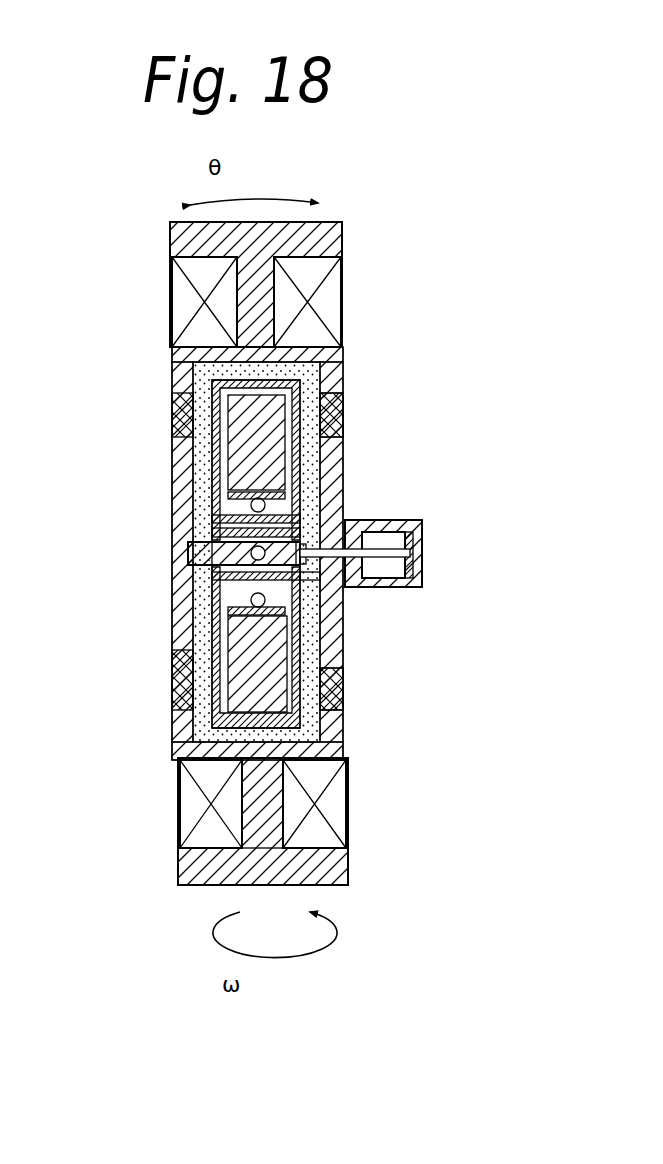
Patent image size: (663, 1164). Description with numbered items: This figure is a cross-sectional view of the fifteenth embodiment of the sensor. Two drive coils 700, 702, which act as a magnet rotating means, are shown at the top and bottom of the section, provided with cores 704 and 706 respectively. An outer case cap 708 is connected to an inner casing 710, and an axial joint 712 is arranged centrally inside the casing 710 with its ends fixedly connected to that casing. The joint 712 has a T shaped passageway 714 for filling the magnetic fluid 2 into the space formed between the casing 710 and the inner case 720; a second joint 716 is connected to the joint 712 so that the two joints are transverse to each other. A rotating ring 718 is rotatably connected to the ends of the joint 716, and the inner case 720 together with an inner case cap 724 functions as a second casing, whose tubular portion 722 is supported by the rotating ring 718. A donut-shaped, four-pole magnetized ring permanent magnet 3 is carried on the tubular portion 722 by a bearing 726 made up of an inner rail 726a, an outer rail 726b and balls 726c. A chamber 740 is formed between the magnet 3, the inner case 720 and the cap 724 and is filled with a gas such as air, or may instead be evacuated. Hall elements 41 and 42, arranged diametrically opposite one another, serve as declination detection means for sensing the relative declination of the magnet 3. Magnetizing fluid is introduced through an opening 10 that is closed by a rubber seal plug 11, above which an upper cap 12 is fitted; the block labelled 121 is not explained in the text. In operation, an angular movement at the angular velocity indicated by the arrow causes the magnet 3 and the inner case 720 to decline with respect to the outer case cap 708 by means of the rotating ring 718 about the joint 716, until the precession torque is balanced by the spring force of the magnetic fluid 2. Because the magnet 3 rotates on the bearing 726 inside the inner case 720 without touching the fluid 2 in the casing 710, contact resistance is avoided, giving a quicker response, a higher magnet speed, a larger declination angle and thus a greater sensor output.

The drive coil 700 is at (343, 298).
The core 704 is at (180, 228).
The drive coil 702 is at (190, 805).
The core 706 is at (185, 868).
The outer case cap 708 is at (343, 358).
The inner case 720 is at (343, 748).
The chamber 740 is at (185, 352).
The inner casing 710 is at (200, 375).
The inner case cap 724 is at (213, 402).
The magnetic fluid 2 is at (205, 734).
The magnet block 121 is at (183, 422).
The Hall element 41 is at (343, 405).
The Hall element 42 is at (345, 690).
The bearing 726 is at (376, 466).
The inner rail 726a is at (300, 530).
The outer rail 726b is at (272, 473).
The balls 726c is at (262, 505).
The tubular portion 722 is at (240, 497).
The axial joint 712 is at (190, 553).
The rotating ring 718 is at (230, 574).
The T shaped passageway 714 is at (308, 562).
The joint 716 is at (316, 582).
The permanent magnet 3 is at (240, 650).
The upper cap 12 is at (418, 521).
The seal plug 11 is at (422, 553).
The opening 10 is at (422, 578).